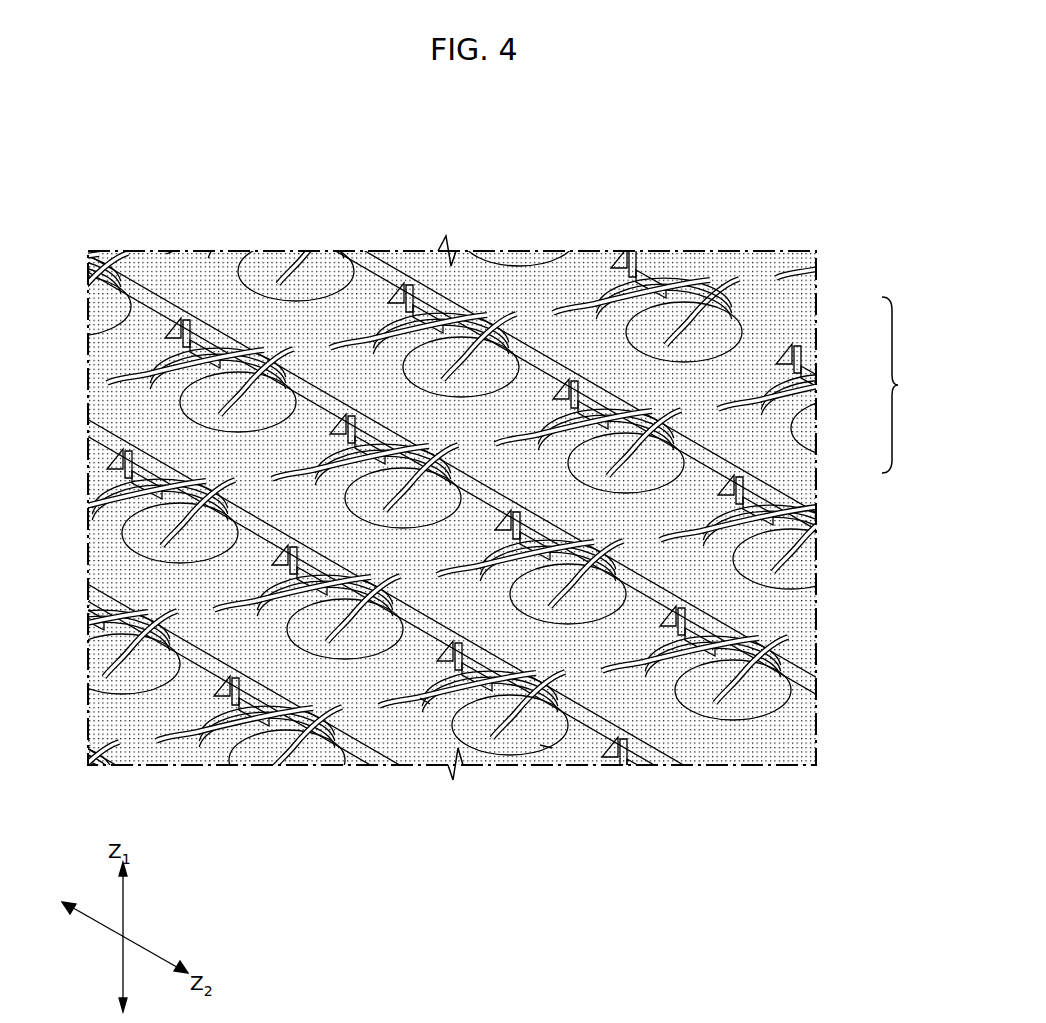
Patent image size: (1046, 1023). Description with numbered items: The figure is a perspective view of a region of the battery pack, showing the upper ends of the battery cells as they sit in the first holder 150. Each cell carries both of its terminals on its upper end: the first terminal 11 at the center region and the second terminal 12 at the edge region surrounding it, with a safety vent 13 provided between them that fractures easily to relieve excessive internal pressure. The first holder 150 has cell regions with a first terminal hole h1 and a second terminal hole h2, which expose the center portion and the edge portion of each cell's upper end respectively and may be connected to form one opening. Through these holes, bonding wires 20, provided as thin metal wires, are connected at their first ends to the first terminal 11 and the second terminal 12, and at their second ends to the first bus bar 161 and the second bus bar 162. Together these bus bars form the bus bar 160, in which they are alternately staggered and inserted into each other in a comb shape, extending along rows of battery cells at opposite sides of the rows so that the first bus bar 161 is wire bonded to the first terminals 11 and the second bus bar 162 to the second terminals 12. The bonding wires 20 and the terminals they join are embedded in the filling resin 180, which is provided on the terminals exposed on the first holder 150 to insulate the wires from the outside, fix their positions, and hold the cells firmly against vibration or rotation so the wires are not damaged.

The first terminal 11 is at (705, 340).
The second terminal 12 is at (640, 293).
The safety vent 13 is at (625, 327).
The bonding wires 20 is at (482, 539).
The first holder 150 is at (577, 753).
The bus bar 160 is at (910, 385).
The first bus bar 161 is at (807, 312).
The second bus bar 162 is at (802, 467).
The filling resin 180 is at (166, 265).
The first terminal hole h1 is at (547, 747).
The second terminal hole h2 is at (425, 700).